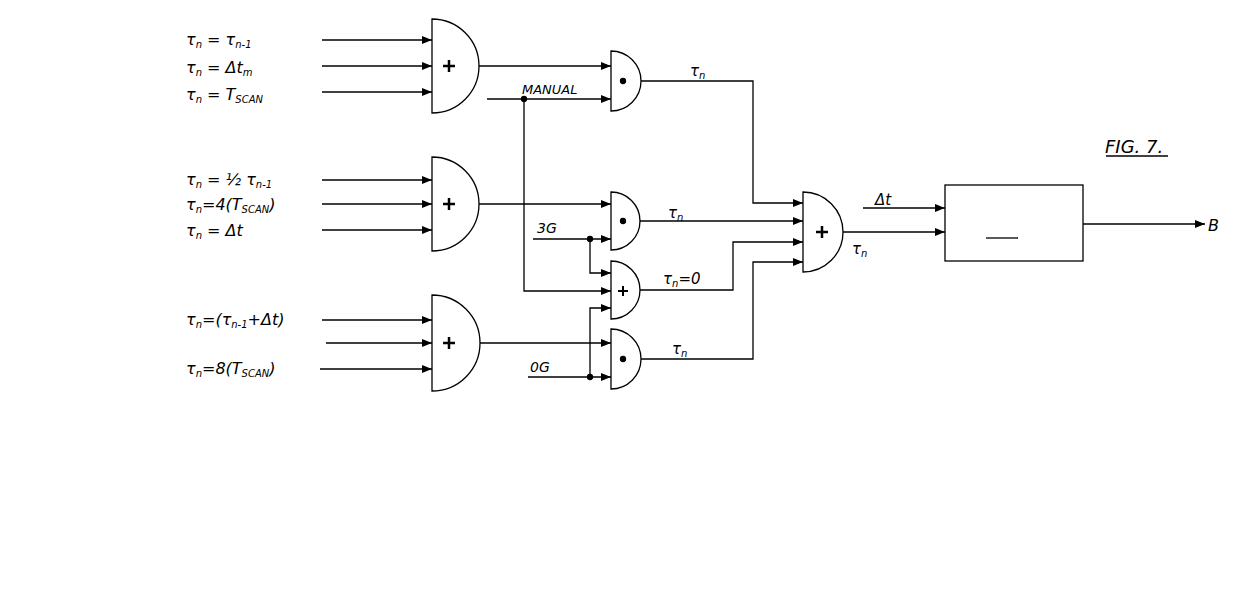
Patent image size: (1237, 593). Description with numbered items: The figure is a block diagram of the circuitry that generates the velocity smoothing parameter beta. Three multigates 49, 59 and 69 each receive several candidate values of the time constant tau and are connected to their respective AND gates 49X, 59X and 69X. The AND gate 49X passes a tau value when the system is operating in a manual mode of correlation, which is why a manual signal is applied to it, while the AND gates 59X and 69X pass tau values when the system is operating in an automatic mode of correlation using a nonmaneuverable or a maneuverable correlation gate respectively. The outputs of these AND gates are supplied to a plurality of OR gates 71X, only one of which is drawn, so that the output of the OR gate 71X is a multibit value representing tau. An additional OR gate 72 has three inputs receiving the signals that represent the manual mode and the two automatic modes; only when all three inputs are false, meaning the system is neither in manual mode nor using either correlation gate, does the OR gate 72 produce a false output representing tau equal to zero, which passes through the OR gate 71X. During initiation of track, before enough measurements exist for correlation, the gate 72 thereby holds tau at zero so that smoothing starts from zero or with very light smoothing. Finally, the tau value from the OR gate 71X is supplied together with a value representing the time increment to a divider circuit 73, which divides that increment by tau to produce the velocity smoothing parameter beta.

The multigate 49 is at (478, 39).
The AND gate 49X is at (631, 60).
The multigate 69 is at (458, 174).
The AND gate 69X is at (628, 198).
The multigate 59 is at (454, 315).
The AND gate 59X is at (630, 338).
The OR gate 72 is at (631, 271).
The OR gate 71X is at (817, 205).
The divider circuit 73 is at (1031, 185).